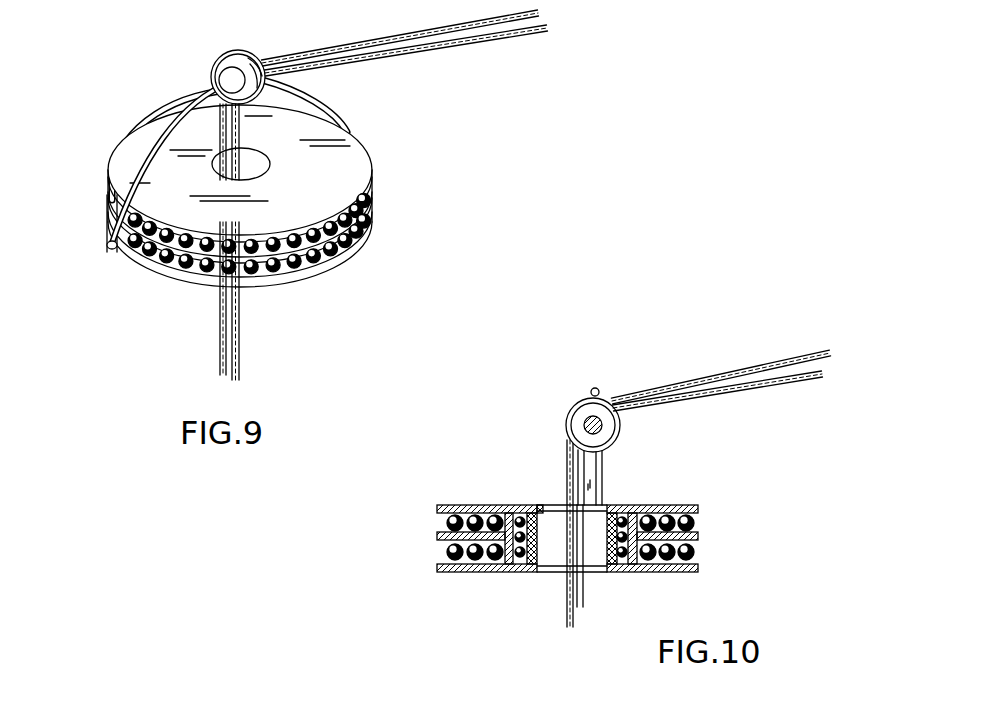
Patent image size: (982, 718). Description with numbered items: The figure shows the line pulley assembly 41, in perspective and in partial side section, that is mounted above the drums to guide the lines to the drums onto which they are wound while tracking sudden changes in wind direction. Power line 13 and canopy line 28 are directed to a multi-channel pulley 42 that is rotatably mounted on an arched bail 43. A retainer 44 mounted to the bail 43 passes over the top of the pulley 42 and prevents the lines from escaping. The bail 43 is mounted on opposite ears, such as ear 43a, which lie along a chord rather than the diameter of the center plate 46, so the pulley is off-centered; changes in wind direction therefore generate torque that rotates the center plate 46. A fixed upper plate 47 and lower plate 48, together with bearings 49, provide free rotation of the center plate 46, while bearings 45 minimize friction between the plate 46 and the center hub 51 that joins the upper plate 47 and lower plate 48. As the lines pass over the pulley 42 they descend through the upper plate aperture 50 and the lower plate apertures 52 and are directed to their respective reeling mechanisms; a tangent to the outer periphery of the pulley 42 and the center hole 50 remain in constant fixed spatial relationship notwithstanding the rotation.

In FIG. 9, the power line 13 is at (239, 355).
In FIG. 10, the power line 13 is at (590, 477).
In FIG. 9, the canopy line 28 is at (500, 38).
In FIG. 10, the canopy line 28 is at (570, 533).
In FIG. 9, the pulley assembly 41 is at (297, 292).
In FIG. 10, the pulley assembly 41 is at (432, 497).
In FIG. 9, the multi-channel pulley 42 is at (231, 52).
In FIG. 10, the multi-channel pulley 42 is at (577, 408).
In FIG. 9, the arched bail 43 is at (160, 137).
In FIG. 9, the ear 43a is at (105, 233).
In FIG. 9, the retainer 44 is at (257, 60).
In FIG. 10, the retainer 44 is at (595, 389).
In FIG. 10, the bearings 45 is at (503, 570).
In FIG. 9, the center plate 46 is at (372, 232).
In FIG. 10, the center plate 46 is at (703, 536).
In FIG. 9, the upper plate 47 is at (113, 163).
In FIG. 10, the upper plate 47 is at (475, 505).
In FIG. 9, the lower plate 48 is at (352, 256).
In FIG. 10, the lower plate 48 is at (452, 572).
In FIG. 9, the bearings 49 is at (195, 266).
In FIG. 10, the bearings 49 is at (452, 551).
In FIG. 10, the aperture 50 is at (543, 505).
In FIG. 10, the center hub 51 is at (535, 572).
In FIG. 10, the lower plate apertures 52 is at (590, 572).